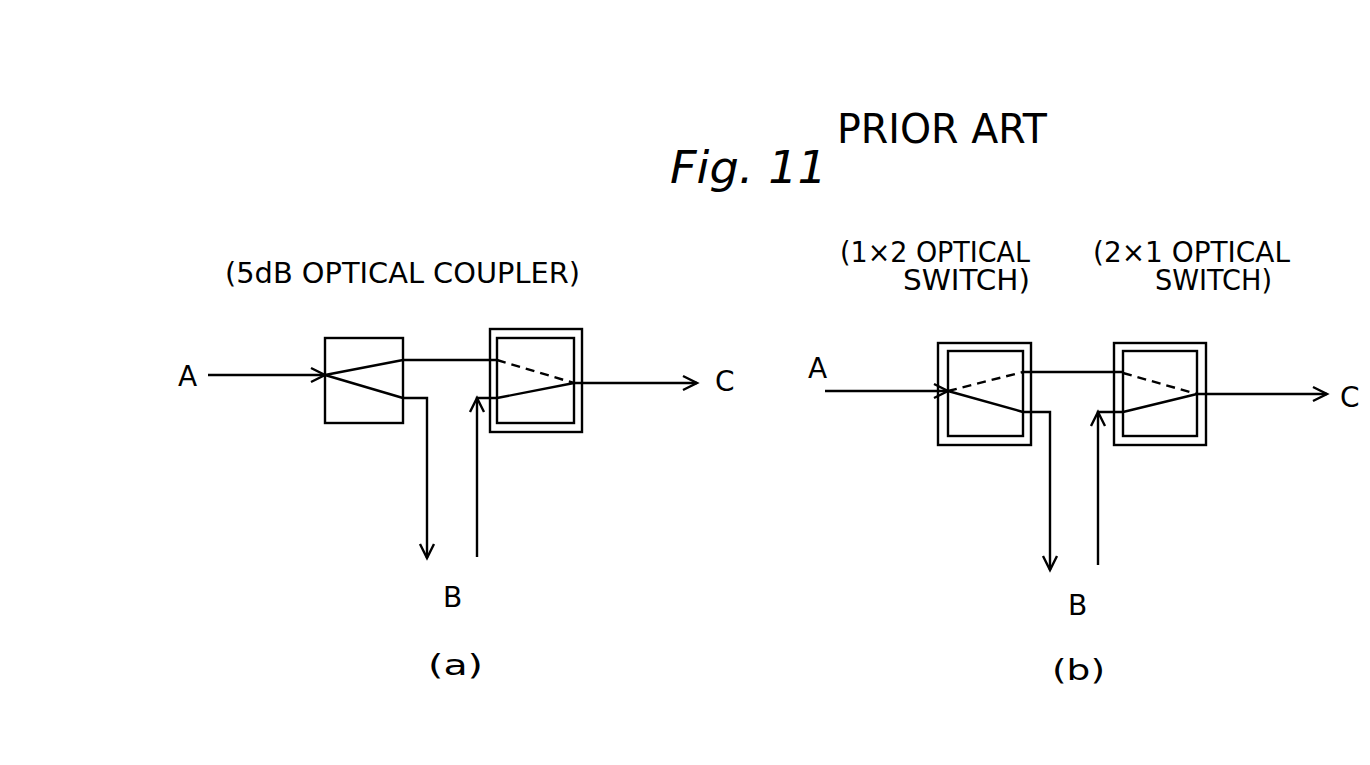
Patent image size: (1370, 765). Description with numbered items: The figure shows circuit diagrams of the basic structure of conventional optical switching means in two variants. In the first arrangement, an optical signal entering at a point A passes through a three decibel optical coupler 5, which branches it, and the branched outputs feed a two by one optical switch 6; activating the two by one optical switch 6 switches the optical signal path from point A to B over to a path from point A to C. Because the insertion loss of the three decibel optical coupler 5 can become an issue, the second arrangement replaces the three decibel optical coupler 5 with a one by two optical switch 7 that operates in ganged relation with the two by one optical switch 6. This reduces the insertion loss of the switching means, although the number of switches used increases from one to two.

The 3 dB optical coupler 5 is at (345, 338).
The 2 by 1 optical switch 6 is at (549, 329).
The 1 by 2 optical switch 7 is at (983, 343).